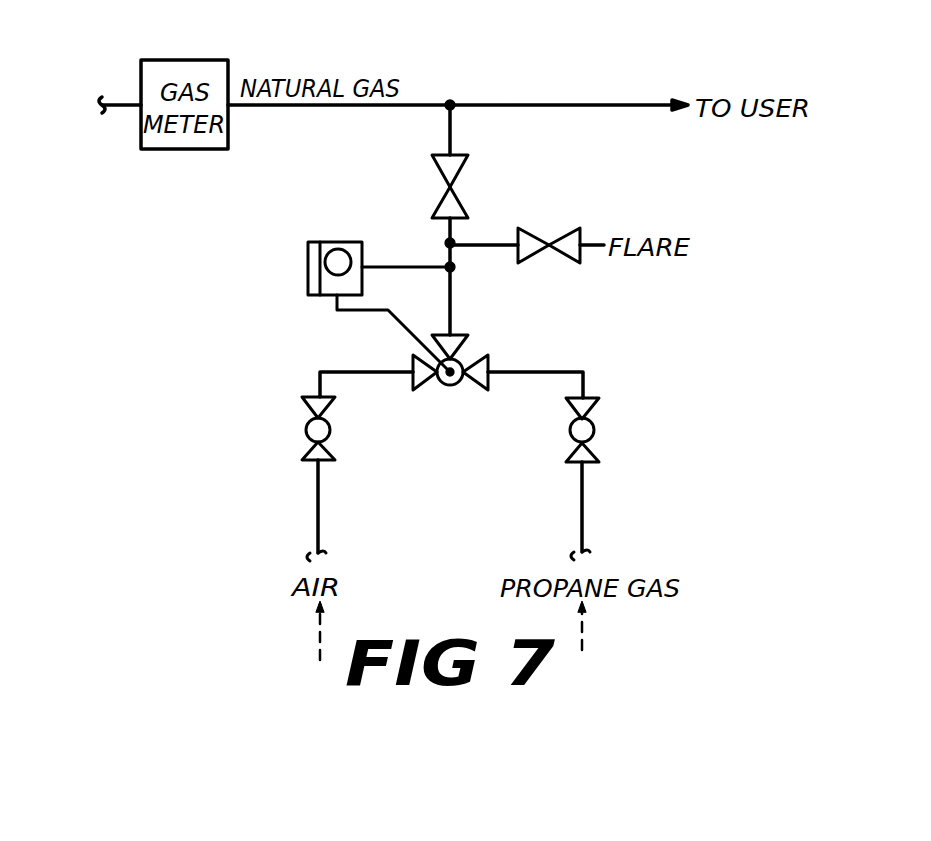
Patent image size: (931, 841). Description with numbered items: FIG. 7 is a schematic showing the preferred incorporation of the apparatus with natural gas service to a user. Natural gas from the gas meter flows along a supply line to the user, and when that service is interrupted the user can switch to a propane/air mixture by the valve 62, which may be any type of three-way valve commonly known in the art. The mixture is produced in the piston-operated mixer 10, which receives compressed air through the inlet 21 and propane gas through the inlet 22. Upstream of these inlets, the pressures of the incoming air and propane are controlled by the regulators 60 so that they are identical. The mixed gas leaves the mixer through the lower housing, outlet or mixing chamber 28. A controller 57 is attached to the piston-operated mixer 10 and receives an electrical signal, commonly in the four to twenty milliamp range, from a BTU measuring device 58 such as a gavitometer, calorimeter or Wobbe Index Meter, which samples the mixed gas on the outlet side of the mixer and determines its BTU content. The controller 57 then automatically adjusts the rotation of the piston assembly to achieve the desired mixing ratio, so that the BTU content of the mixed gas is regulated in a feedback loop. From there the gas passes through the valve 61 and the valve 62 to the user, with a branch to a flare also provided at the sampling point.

The piston-operated mixer 10 is at (452, 391).
The inlet 21 is at (373, 372).
The inlet 22 is at (515, 372).
The lower housing, outlet or mixing chamber 28 is at (452, 318).
The controller 57 is at (320, 242).
The BTU measuring device 58 is at (448, 264).
The regulators 60 is at (306, 432).
The valve 61 is at (456, 176).
The valve 62 is at (451, 103).